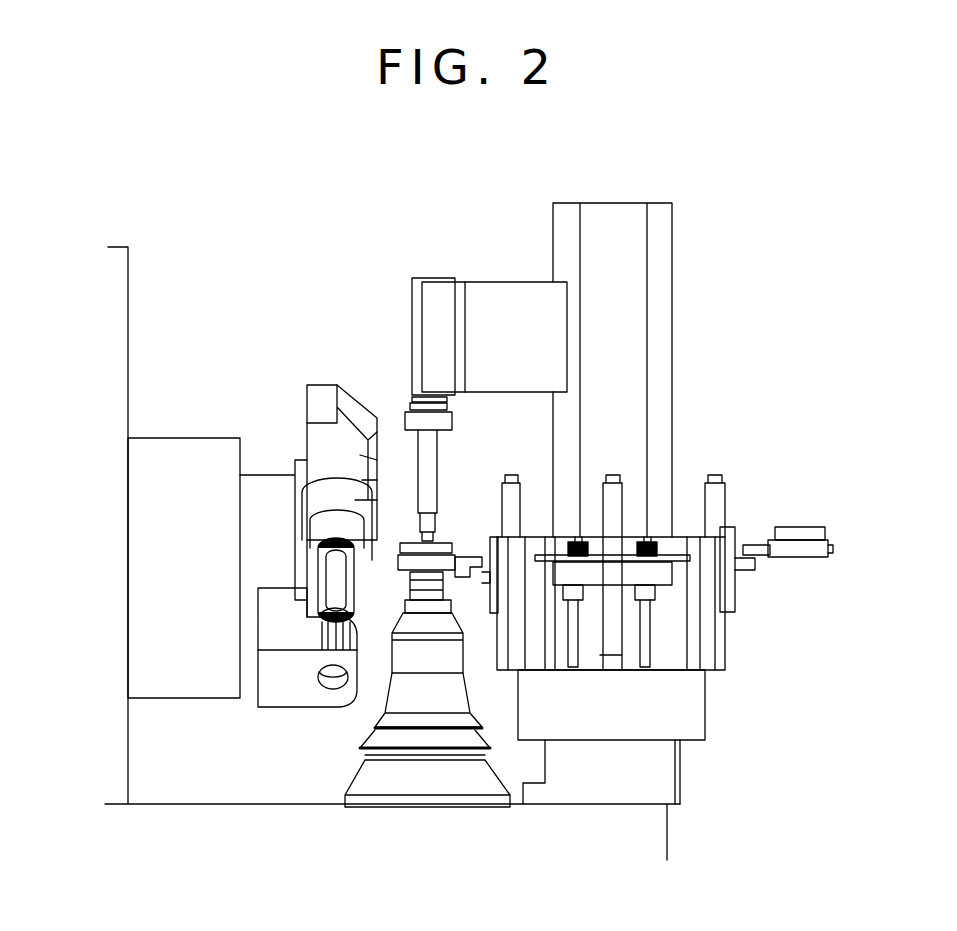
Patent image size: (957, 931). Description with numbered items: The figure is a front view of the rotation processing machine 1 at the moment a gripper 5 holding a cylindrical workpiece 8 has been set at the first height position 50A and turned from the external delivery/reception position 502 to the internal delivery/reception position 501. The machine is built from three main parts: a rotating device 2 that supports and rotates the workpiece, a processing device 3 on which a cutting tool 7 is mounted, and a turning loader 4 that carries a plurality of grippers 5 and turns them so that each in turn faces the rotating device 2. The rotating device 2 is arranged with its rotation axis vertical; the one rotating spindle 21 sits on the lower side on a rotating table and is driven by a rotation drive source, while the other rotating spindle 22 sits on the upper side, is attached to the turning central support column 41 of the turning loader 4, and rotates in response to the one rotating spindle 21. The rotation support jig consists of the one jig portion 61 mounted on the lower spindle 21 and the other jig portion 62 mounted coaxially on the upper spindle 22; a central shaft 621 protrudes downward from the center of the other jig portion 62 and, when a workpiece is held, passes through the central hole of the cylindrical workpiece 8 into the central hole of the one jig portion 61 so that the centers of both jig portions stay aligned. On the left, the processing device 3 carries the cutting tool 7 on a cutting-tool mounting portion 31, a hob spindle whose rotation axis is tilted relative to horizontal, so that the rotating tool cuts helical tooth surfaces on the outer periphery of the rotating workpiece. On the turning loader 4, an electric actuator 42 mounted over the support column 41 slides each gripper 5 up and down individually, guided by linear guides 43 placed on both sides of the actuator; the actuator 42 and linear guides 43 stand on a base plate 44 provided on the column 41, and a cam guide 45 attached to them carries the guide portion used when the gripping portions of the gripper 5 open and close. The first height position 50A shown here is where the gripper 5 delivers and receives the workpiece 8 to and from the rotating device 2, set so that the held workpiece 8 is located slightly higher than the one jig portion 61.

The rotation processing machine 1 is at (719, 800).
The rotating device 2 is at (390, 819).
The one rotating spindle 21 is at (455, 788).
The other rotating spindle 22 is at (487, 300).
The processing device 3 is at (275, 447).
The cutting-tool mounting portion 31 is at (280, 693).
The turning loader 4 is at (746, 697).
The turning central support column 41 is at (618, 276).
The electric actuator 42 is at (610, 500).
The linear guides 43 is at (647, 640).
The base plate 44 is at (665, 605).
The cam guide 45 is at (738, 572).
The gripper 5 is at (643, 537).
The internal delivery/reception position 501 is at (467, 553).
The external delivery/reception position 502 is at (810, 552).
The first height position 50A is at (386, 541).
The cutting tool 7 is at (313, 587).
The cylindrical workpiece 8 is at (445, 537).
The one jig portion 61 is at (415, 607).
The other jig portion 62 is at (410, 410).
The central shaft 621 is at (428, 475).